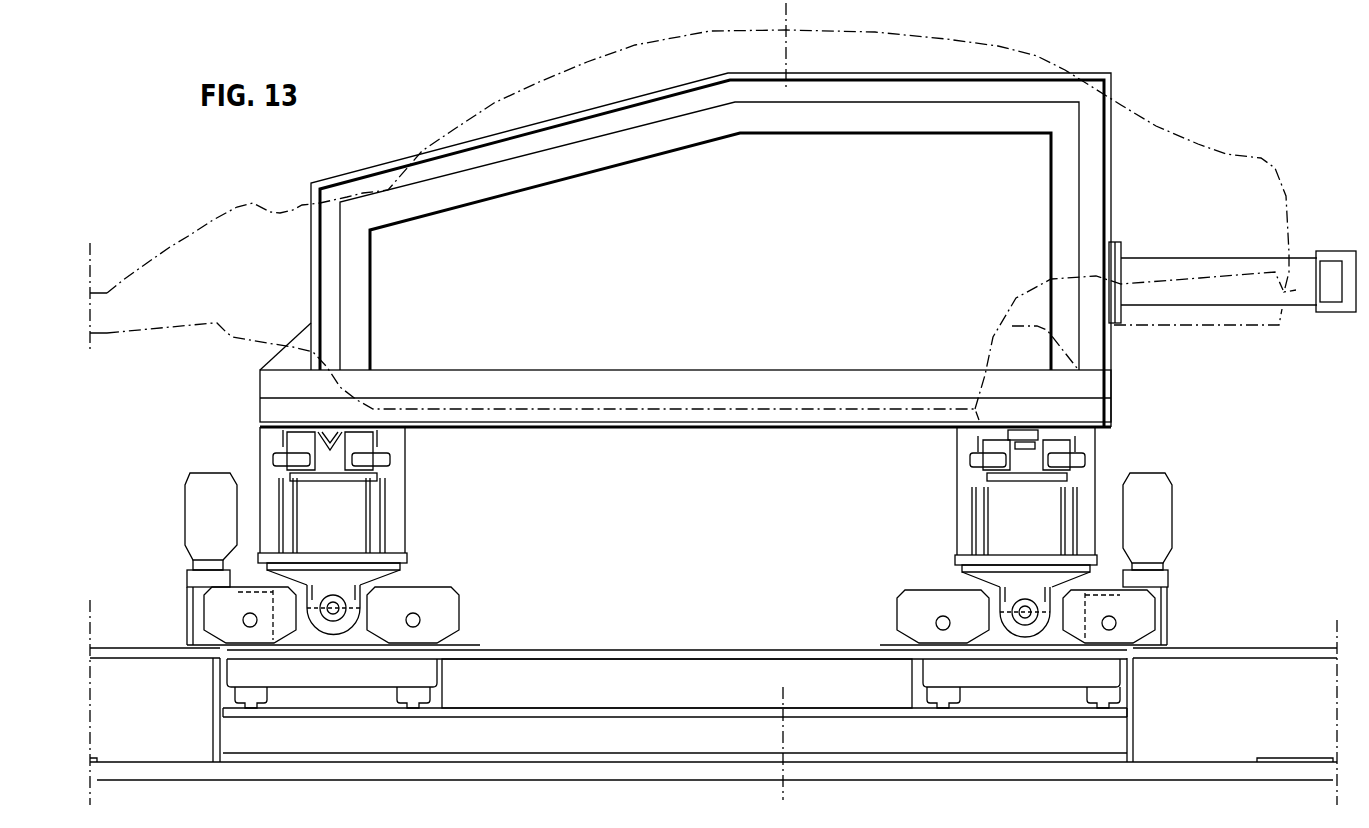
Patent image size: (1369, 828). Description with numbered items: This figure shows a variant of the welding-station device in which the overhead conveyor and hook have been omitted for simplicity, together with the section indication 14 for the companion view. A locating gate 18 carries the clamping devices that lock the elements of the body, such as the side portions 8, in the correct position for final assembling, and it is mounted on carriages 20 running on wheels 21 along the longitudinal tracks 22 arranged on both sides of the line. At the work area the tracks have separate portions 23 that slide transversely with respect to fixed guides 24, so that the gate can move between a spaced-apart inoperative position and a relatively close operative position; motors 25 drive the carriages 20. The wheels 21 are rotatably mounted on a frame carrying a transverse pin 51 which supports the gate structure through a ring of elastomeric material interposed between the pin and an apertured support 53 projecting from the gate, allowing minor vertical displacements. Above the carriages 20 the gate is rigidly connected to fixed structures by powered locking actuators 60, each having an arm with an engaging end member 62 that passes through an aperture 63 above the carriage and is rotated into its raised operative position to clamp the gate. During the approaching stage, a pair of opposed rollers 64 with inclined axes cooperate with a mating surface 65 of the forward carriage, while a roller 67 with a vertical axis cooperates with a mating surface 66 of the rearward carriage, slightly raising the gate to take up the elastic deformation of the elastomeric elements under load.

The side portions 8 is at (1200, 150).
The section line 14 is at (786, 9).
The locating gate 18 is at (1100, 105).
The carriage 20 is at (462, 552).
The wheels 21 is at (232, 648).
The longitudinal tracks 22 is at (130, 642).
The separate portions 23 is at (418, 673).
The fixed guides 24 is at (393, 693).
The motors 25 is at (202, 503).
The transverse pin 51 is at (333, 622).
The apertured support 53 is at (347, 603).
The powered locking actuators 60 is at (297, 447).
The engaging end member 62 is at (277, 463).
The aperture 63 is at (1042, 447).
The opposed rollers 64 is at (340, 432).
The mating surface 65 is at (336, 481).
The mating surface 66 is at (1023, 450).
The roller 67 is at (1033, 437).